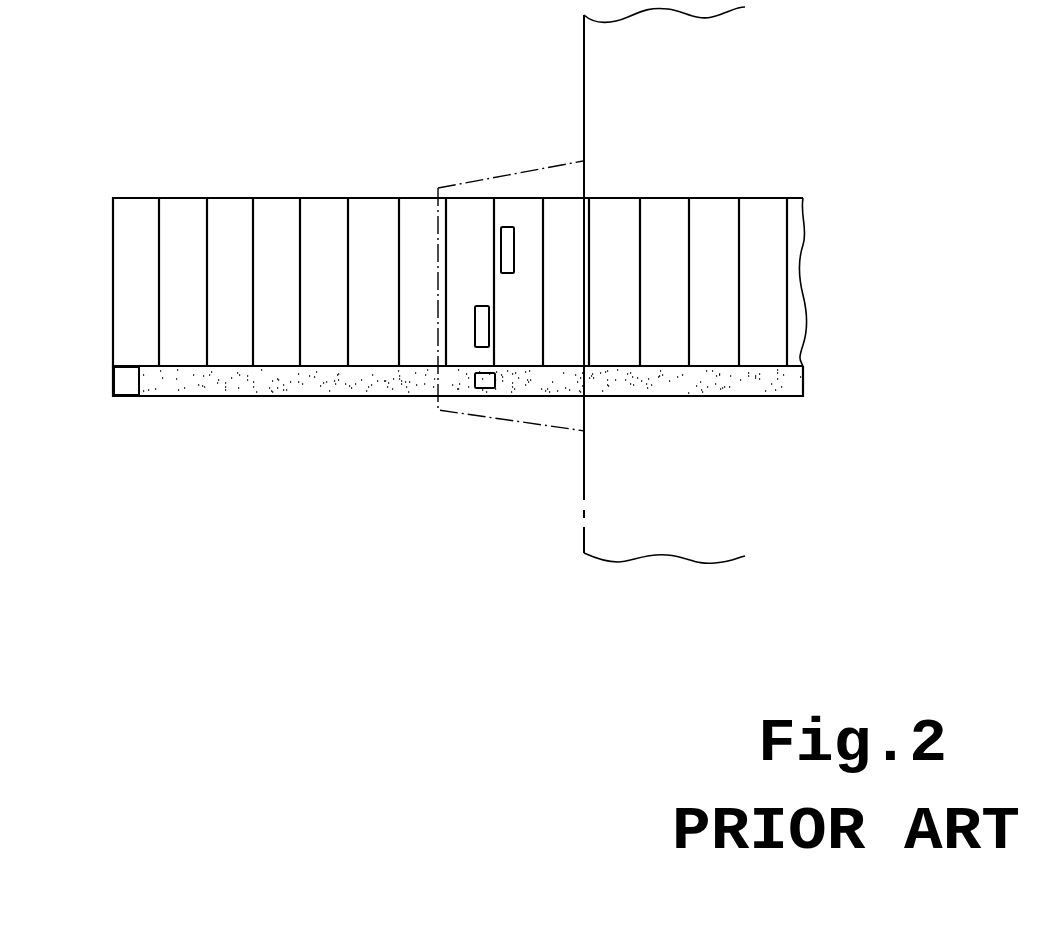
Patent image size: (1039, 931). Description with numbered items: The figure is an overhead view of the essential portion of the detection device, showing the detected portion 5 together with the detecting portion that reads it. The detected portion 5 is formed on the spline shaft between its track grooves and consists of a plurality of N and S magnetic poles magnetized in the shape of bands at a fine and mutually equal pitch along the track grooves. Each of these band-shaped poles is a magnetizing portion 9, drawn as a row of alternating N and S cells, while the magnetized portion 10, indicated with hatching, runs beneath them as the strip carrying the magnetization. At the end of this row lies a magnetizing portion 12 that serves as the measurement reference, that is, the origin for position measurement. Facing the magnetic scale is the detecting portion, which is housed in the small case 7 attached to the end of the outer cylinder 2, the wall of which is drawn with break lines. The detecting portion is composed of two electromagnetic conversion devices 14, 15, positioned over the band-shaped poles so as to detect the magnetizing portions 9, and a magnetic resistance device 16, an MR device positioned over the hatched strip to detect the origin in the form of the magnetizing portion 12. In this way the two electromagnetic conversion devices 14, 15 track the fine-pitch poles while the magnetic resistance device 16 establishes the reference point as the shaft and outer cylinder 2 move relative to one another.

The outer cylinder 2 is at (583, 539).
The detected portion 5 is at (460, 203).
The small case 7 is at (577, 430).
The magnetizing portion 9 is at (363, 213).
The magnetized portion 10 is at (246, 386).
The magnetizing portion 12 is at (128, 392).
The electromagnetic conversion device 14 is at (477, 327).
The electromagnetic conversion device 15 is at (512, 257).
The magnetic resistance device 16 is at (484, 389).